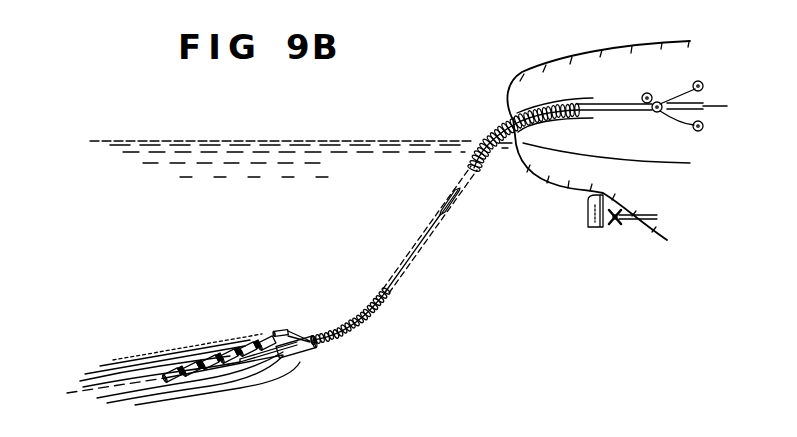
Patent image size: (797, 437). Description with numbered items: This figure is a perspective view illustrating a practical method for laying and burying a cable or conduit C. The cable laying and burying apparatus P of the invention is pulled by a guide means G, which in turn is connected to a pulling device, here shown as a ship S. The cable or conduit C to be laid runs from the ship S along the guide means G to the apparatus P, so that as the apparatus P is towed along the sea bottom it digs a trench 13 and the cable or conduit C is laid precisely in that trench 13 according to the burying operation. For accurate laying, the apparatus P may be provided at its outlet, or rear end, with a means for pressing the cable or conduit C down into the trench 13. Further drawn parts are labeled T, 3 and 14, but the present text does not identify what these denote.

The ship S is at (596, 63).
The tow connector T is at (452, 206).
The cable or conduit C is at (412, 258).
The guide means G is at (383, 290).
The cable laying and burying apparatus P is at (294, 334).
The trench 13 is at (150, 375).
The rod 3 is at (263, 368).
The connector housing 14 is at (298, 353).